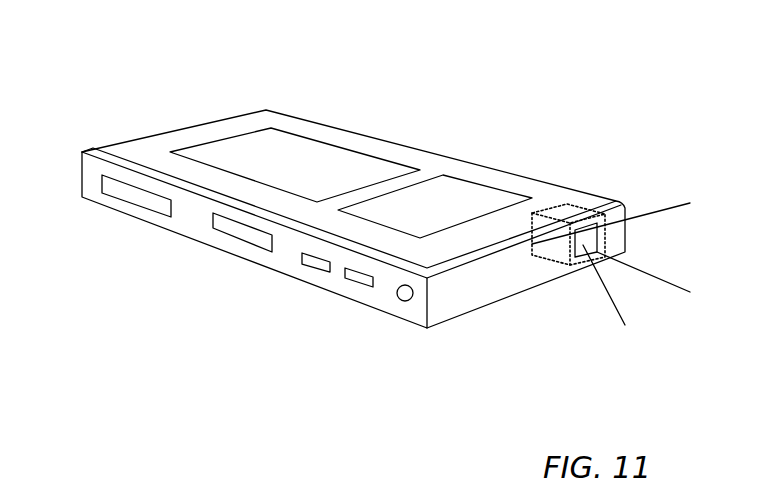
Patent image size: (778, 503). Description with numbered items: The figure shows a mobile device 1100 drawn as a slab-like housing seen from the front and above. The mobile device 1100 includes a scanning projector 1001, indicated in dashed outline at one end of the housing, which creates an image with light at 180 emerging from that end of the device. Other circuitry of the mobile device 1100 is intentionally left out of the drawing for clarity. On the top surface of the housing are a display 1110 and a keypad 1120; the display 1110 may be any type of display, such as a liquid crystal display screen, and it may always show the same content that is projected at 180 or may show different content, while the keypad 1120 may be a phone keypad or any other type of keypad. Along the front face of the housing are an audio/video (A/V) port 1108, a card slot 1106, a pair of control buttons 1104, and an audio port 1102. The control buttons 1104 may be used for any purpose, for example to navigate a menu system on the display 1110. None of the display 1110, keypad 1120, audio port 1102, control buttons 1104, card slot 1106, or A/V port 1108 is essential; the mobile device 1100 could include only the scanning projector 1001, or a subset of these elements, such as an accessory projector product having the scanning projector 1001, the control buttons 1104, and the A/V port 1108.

The mobile device 1100 is at (648, 65).
The keypad 1120 is at (304, 150).
The display 1110 is at (447, 185).
The audio/video (A/V) port 1108 is at (122, 189).
The card slot 1106 is at (235, 233).
The control buttons 1104 is at (350, 279).
The audio port 1102 is at (402, 302).
The scanning projector 1001 is at (568, 210).
The light 180 is at (587, 233).